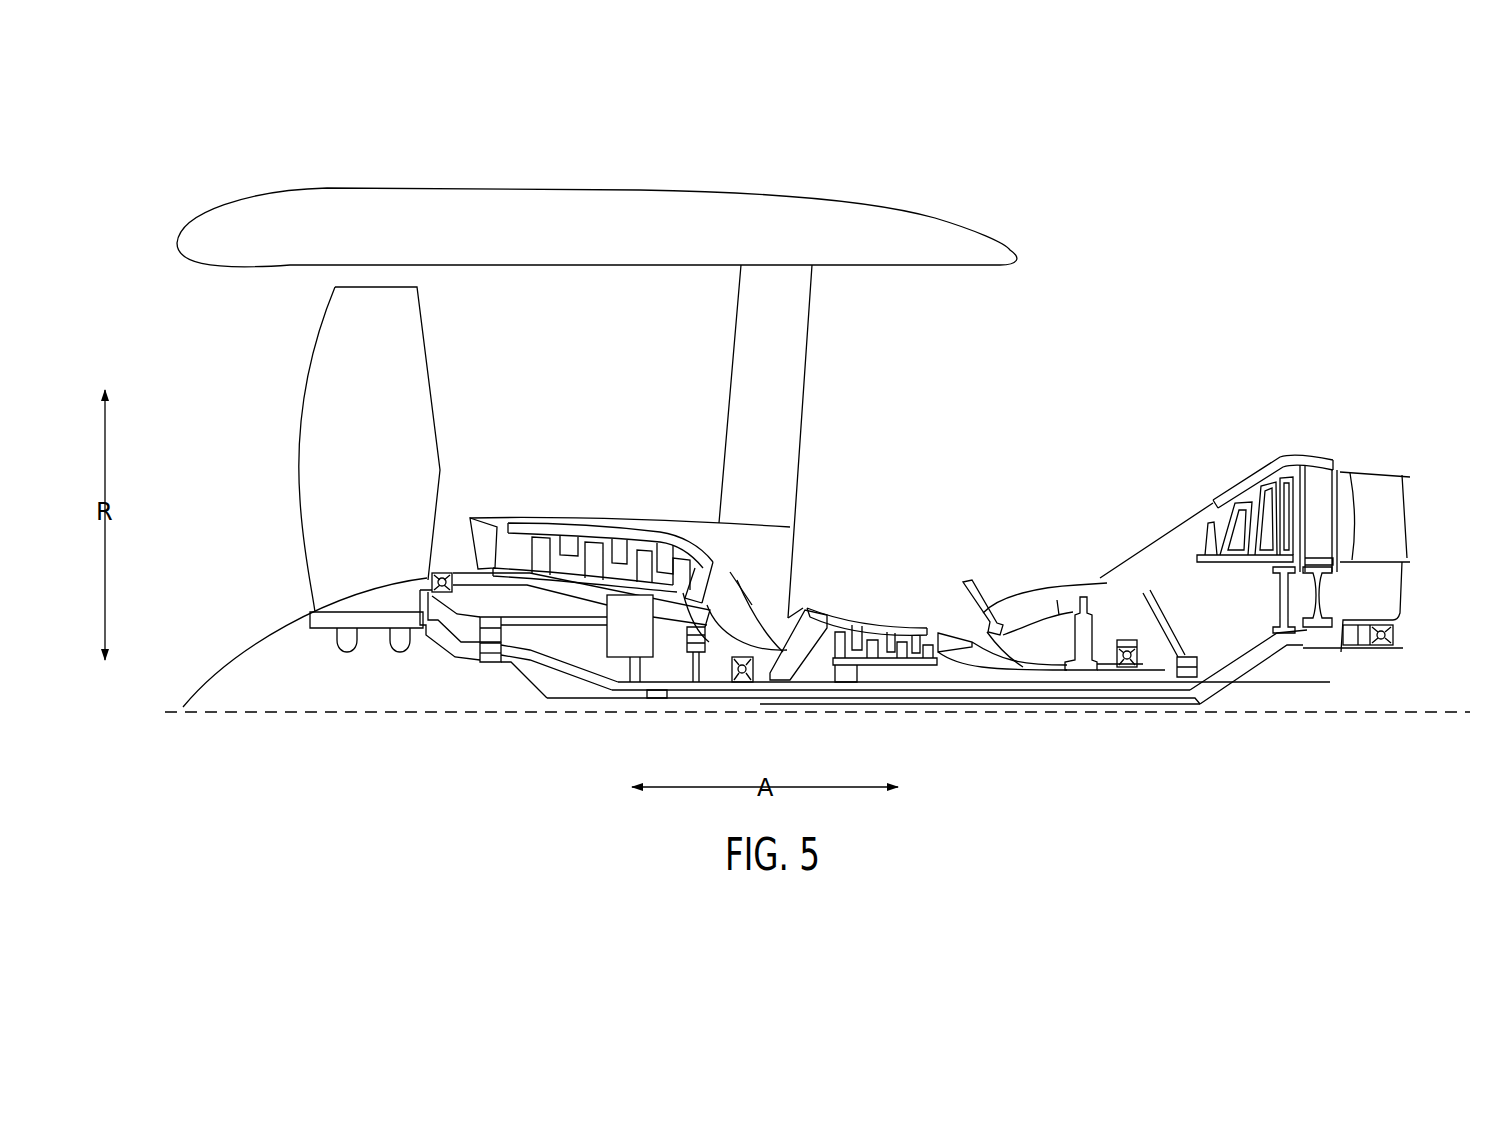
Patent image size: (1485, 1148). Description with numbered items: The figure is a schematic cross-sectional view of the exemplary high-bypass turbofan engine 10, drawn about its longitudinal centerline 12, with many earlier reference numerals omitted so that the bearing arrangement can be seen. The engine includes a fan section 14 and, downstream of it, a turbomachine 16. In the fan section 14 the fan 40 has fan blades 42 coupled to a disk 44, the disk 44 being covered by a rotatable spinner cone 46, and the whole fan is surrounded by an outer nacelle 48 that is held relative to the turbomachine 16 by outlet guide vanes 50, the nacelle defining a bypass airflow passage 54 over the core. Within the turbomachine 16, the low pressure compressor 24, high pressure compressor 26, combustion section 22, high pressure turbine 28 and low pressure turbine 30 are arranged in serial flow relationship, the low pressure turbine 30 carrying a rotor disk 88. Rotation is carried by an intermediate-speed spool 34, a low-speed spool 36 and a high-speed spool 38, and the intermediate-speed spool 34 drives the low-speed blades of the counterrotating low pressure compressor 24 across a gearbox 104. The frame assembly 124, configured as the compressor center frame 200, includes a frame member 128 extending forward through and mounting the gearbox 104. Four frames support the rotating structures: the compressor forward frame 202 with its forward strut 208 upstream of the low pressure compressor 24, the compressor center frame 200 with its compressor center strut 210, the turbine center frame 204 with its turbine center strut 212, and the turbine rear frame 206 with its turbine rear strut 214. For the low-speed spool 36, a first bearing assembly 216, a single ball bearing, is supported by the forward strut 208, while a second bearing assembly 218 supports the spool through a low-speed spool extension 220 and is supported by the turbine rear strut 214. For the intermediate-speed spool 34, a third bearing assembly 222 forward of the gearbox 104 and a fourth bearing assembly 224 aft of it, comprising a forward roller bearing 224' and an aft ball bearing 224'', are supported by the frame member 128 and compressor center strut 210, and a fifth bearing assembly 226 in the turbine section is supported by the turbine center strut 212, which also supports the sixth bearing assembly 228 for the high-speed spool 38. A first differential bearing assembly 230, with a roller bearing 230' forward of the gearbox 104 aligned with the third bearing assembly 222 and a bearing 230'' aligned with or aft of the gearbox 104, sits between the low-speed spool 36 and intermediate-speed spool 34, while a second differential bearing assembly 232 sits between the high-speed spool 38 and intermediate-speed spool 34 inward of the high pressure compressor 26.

The turbofan engine 10 is at (1117, 198).
The longitudinal centerline 12 is at (290, 715).
The fan section 14 is at (291, 278).
The turbomachine 16 is at (995, 452).
The combustion section 22 is at (1021, 580).
The low pressure compressor 24 is at (598, 518).
The high pressure compressor 26 is at (884, 620).
The high pressure turbine 28 is at (1084, 580).
The low pressure turbine 30 is at (1273, 448).
The intermediate-speed spool 34 is at (885, 690).
The low-speed spool 36 is at (955, 699).
The high-speed spool 38 is at (1025, 670).
The fan 40 is at (241, 400).
The fan blades 42 is at (385, 444).
The disk 44 is at (333, 608).
The spinner cone 46 is at (214, 680).
The outer nacelle 48 is at (523, 196).
The outlet guide vanes 50 is at (727, 392).
The bypass airflow passage 54 is at (890, 399).
The rotor disk 88 is at (1318, 593).
The gearbox 104 is at (648, 636).
The frame assembly 124 is at (880, 500).
The frame member 128 is at (560, 645).
The compressor center frame 200 is at (741, 588).
The compressor forward frame 202 is at (493, 510).
The turbine center frame 204 is at (1141, 530).
The turbine rear frame 206 is at (1388, 463).
The forward strut 208 is at (478, 555).
The compressor center strut 210 is at (757, 610).
The turbine center strut 212 is at (1130, 593).
The turbine rear strut 214 is at (1380, 507).
The first bearing assembly 216 is at (420, 583).
The second bearing assembly 218 is at (1412, 625).
The low-speed spool extension 220 is at (1363, 652).
The third bearing assembly 222 is at (517, 632).
The fourth bearing assembly 224 is at (671, 695).
The forward roller bearing 224' is at (735, 598).
The aft ball bearing 224'' is at (749, 710).
The fifth bearing assembly 226 is at (1208, 660).
The sixth bearing assembly 228 is at (1145, 657).
The first differential bearing assembly 230 is at (445, 704).
The roller bearing 230' is at (475, 714).
The bearing 230'' is at (613, 736).
The second differential bearing assembly 232 is at (822, 673).